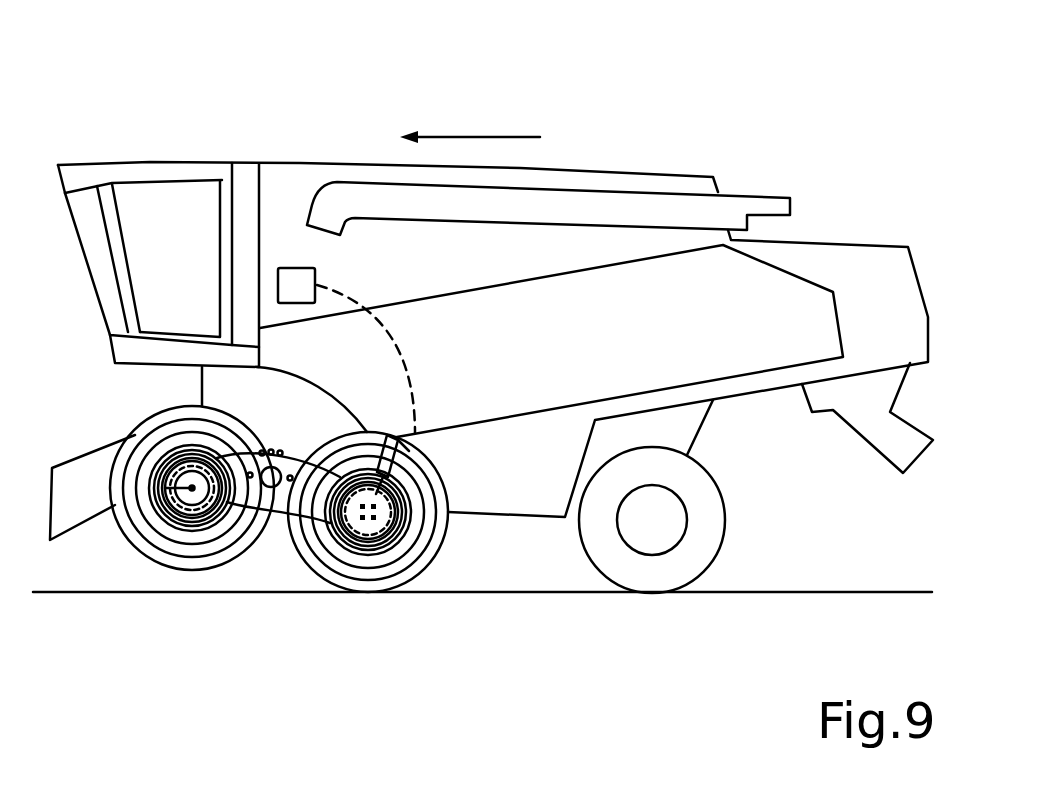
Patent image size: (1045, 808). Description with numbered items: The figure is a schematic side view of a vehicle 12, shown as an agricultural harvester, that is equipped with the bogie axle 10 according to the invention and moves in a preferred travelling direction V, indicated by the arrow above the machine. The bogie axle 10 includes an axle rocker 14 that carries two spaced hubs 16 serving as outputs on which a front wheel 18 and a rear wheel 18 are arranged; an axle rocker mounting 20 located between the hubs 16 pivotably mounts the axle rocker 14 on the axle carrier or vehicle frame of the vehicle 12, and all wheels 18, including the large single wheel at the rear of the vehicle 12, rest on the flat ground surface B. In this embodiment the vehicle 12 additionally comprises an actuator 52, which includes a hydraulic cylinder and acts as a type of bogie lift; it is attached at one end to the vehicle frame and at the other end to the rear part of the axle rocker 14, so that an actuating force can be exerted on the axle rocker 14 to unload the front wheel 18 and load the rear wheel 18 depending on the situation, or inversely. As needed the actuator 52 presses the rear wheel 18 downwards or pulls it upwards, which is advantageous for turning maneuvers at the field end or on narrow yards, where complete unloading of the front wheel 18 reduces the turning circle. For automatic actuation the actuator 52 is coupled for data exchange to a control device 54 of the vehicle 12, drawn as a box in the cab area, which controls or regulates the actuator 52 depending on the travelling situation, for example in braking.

The bogie axle 10 is at (286, 551).
The vehicle 12 is at (208, 158).
The axle rocker 14 is at (300, 460).
The hub 16 is at (152, 483).
The wheel 18 is at (171, 562).
The axle rocker mounting 20 is at (270, 466).
The actuator 52 is at (410, 452).
The control device 54 is at (293, 268).
The ground surface B is at (512, 593).
The travelling direction V is at (468, 135).